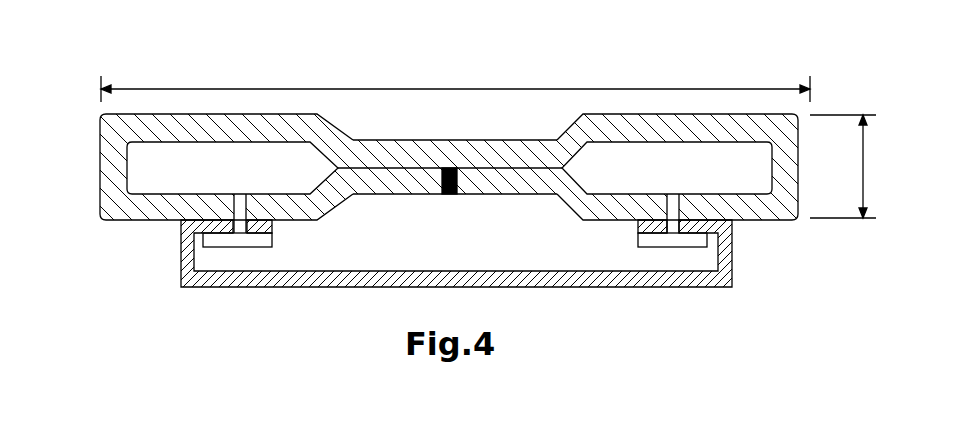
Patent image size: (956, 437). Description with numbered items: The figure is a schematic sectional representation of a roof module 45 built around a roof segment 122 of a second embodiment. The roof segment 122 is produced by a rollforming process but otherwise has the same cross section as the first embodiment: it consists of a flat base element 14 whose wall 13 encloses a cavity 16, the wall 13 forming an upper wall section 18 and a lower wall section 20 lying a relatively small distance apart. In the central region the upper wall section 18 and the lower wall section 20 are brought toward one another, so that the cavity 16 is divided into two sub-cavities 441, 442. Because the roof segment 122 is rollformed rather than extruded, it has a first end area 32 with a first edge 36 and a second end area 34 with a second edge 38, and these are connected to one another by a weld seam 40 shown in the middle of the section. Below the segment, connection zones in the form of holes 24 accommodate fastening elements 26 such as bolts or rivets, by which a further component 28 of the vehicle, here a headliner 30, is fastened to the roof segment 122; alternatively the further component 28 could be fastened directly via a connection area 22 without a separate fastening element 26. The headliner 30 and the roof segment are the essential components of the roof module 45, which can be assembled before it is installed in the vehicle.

The roof module 45 is at (113, 62).
The upper wall section 18 is at (444, 164).
The lower wall section 20 is at (392, 182).
The cavity 16 is at (449, 168).
The first sub-cavity 441 is at (232, 168).
The second sub-cavity 442 is at (717, 187).
The connection area 22 is at (456, 231).
The hole 24 is at (249, 205).
The fastening element 26 is at (237, 248).
The further component 28 is at (482, 253).
The headliner 30 is at (732, 252).
The first end area 32 is at (443, 186).
The first edge 36 is at (443, 191).
The second end area 34 is at (456, 214).
The second edge 38 is at (458, 194).
The weld seam 40 is at (448, 194).
The roof segment 122 is at (200, 204).
The wall 13 is at (200, 204).
The base element 14 is at (130, 222).